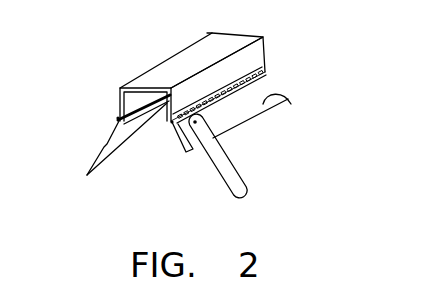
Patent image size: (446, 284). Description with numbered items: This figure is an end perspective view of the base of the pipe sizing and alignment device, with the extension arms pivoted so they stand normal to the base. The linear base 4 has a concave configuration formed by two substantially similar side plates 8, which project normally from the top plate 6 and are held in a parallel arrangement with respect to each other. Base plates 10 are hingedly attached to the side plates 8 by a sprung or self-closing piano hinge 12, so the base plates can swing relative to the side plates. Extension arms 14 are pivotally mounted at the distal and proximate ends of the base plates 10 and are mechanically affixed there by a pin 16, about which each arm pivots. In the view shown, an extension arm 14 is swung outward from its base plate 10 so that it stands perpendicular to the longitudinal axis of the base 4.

The linear base 4 is at (170, 62).
The top plate 6 is at (232, 42).
The side plates 8 is at (118, 118).
The base plates 10 is at (265, 72).
The piano hinge 12 is at (171, 124).
The extension arms 14 is at (242, 181).
The pin 16 is at (195, 122).